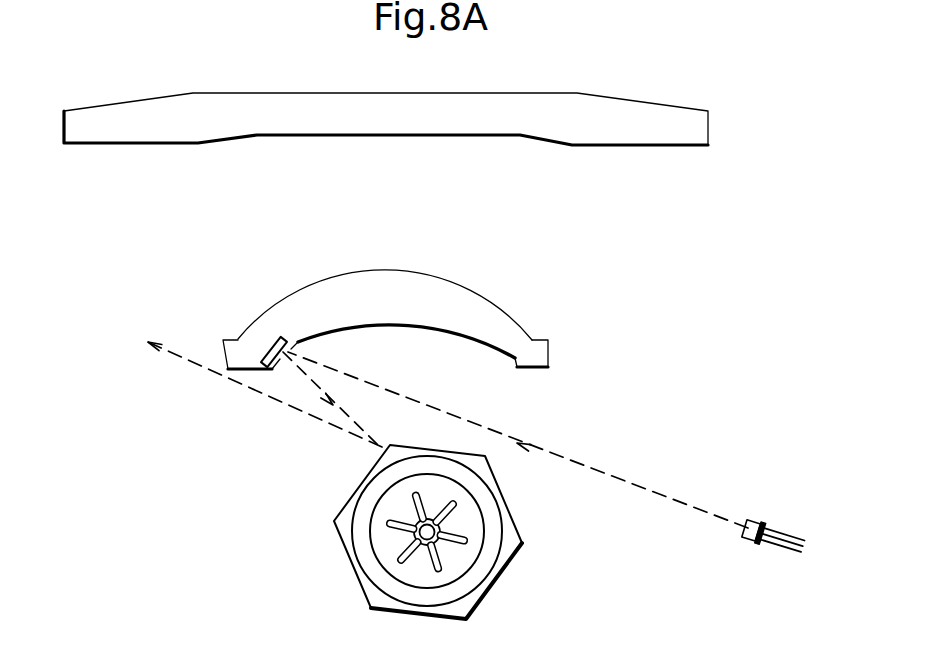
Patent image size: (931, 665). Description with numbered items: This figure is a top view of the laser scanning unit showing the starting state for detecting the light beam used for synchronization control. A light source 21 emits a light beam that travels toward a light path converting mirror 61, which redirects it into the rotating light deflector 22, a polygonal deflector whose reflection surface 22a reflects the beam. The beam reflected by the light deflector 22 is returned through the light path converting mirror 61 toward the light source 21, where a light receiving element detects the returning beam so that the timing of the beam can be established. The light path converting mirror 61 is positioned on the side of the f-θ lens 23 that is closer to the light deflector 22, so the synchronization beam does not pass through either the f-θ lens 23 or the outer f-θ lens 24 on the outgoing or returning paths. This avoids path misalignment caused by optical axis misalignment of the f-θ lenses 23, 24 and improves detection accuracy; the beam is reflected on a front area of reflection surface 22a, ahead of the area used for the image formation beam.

The light source 21 is at (760, 521).
The light deflector 22 is at (405, 532).
The reflection surface 22a is at (340, 513).
The f-θ lens 23 is at (548, 356).
The f-θ lens 24 is at (620, 146).
The light path converting mirror 61 is at (277, 347).